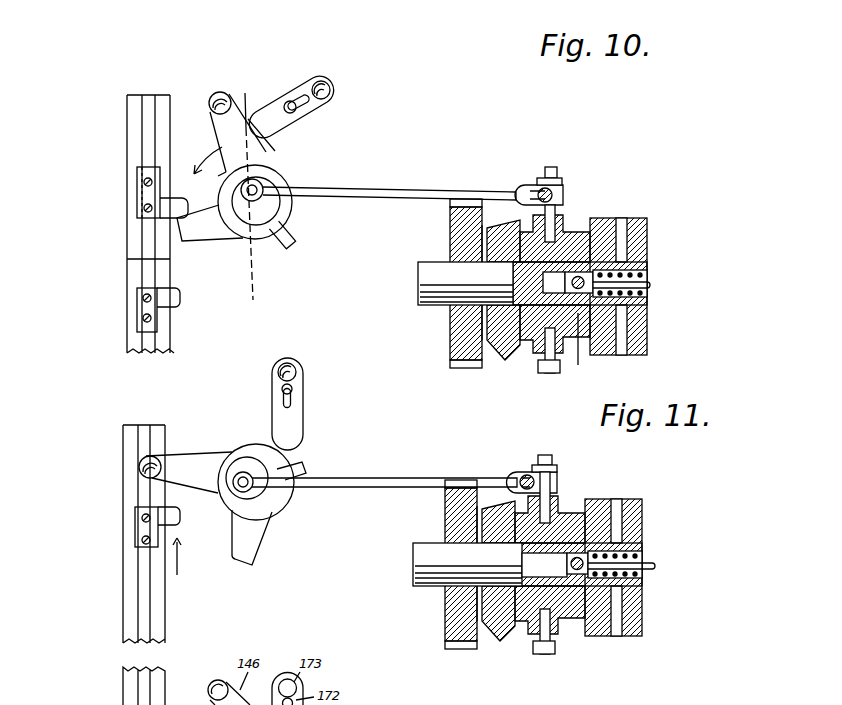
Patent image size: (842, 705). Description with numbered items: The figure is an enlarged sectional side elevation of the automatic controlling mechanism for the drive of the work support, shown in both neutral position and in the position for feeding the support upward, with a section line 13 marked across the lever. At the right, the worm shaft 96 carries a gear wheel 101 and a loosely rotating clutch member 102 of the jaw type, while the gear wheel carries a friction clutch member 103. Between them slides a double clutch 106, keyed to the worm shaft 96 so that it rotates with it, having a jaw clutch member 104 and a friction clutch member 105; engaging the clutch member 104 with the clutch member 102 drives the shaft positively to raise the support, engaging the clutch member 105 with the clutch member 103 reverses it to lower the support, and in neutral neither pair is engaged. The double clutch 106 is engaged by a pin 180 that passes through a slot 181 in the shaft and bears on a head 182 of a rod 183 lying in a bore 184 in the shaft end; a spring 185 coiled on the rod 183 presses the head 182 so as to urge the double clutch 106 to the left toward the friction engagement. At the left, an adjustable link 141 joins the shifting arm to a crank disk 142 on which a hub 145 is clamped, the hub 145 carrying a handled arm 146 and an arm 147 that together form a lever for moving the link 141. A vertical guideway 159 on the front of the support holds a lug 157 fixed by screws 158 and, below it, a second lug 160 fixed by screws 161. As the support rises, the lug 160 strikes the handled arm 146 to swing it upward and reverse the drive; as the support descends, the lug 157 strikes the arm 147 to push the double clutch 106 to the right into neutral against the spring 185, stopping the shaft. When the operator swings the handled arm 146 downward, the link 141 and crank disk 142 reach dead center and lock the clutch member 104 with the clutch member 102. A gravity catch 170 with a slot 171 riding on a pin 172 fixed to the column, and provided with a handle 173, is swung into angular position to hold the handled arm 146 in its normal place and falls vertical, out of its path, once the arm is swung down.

In FIG. 10, the section line 13 is at (248, 190).
In FIG. 10, the worm shaft 96 is at (425, 268).
In FIG. 11, the worm shaft 96 is at (451, 564).
In FIG. 10, the gear wheel 101 is at (453, 363).
In FIG. 11, the gear wheel 101 is at (456, 574).
In FIG. 10, the clutch member 102 is at (628, 220).
In FIG. 10, the clutch member 103 is at (490, 362).
In FIG. 11, the clutch member 103 is at (495, 594).
In FIG. 10, the clutch member 104 is at (605, 222).
In FIG. 11, the clutch member 104 is at (613, 583).
In FIG. 10, the clutch member 105 is at (507, 355).
In FIG. 11, the clutch member 105 is at (502, 587).
In FIG. 10, the double clutch 106 is at (573, 230).
In FIG. 11, the double clutch 106 is at (557, 569).
In FIG. 10, the adjustable link 141 is at (373, 198).
In FIG. 11, the adjustable link 141 is at (372, 484).
In FIG. 10, the crank disk 142 is at (257, 222).
In FIG. 11, the crank disk 142 is at (264, 498).
In FIG. 10, the hub 145 is at (286, 227).
In FIG. 11, the hub 145 is at (291, 471).
In FIG. 10, the handled arm 146 is at (243, 158).
In FIG. 11, the handled arm 146 is at (200, 465).
In FIG. 10, the arm 147 is at (220, 243).
In FIG. 11, the arm 147 is at (255, 549).
In FIG. 10, the lug 157 is at (180, 216).
In FIG. 10, the screws 158 is at (145, 208).
In FIG. 10, the vertical guideway 159 is at (132, 135).
In FIG. 11, the vertical guideway 159 is at (128, 606).
In FIG. 10, the lug 160 is at (180, 303).
In FIG. 11, the lug 160 is at (180, 512).
In FIG. 10, the screws 161 is at (143, 318).
In FIG. 11, the screws 161 is at (142, 540).
In FIG. 10, the catch 170 is at (272, 100).
In FIG. 11, the catch 170 is at (293, 432).
In FIG. 10, the slot 171 is at (312, 104).
In FIG. 11, the slot 171 is at (296, 397).
In FIG. 10, the pin 172 is at (296, 112).
In FIG. 11, the pin 172 is at (282, 388).
In FIG. 10, the handle 173 is at (329, 93).
In FIG. 11, the handle 173 is at (292, 365).
In FIG. 10, the pin 180 is at (580, 322).
In FIG. 11, the pin 180 is at (575, 528).
In FIG. 11, the slot 181 is at (528, 565).
In FIG. 10, the head 182 is at (568, 282).
In FIG. 11, the head 182 is at (620, 543).
In FIG. 10, the rod 183 is at (652, 286).
In FIG. 11, the rod 183 is at (639, 564).
In FIG. 10, the bore 184 is at (646, 277).
In FIG. 11, the bore 184 is at (637, 546).
In FIG. 10, the spring 185 is at (648, 293).
In FIG. 11, the spring 185 is at (641, 585).